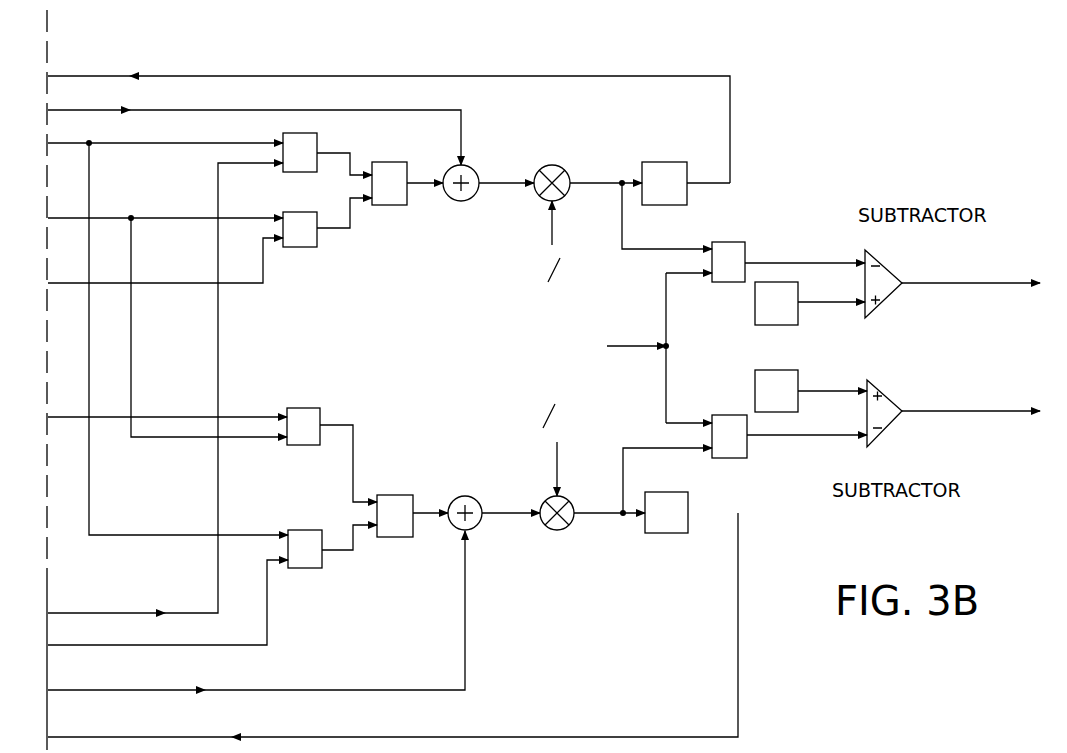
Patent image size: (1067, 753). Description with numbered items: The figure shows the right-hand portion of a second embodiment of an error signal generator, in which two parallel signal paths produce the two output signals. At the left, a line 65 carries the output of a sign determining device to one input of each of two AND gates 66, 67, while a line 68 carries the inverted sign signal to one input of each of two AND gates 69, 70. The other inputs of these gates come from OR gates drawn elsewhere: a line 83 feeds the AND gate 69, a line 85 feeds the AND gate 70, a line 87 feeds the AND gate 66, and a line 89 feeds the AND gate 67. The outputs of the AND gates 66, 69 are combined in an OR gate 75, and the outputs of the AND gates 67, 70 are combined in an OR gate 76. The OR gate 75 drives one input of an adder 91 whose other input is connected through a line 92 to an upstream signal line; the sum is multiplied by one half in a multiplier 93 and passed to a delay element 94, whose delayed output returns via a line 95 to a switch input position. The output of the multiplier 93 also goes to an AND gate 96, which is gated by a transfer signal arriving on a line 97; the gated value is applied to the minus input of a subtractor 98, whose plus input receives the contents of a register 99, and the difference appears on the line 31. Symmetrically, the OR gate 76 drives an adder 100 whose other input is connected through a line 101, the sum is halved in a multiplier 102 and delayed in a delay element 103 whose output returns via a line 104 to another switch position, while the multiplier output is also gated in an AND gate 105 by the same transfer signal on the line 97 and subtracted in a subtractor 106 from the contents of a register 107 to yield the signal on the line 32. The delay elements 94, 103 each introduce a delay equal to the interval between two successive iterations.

The line 31 is at (972, 281).
The line 32 is at (985, 409).
The line 65 is at (60, 143).
The AND gate 66 is at (315, 137).
The AND gate 67 is at (296, 530).
The line 68 is at (62, 216).
The AND gate 69 is at (317, 245).
The AND gate 70 is at (305, 408).
The OR gate 75 is at (394, 162).
The OR gate 76 is at (392, 495).
The line 83 is at (63, 281).
The line 85 is at (62, 414).
The line 87 is at (90, 612).
The line 89 is at (215, 647).
The adder 91 is at (460, 202).
The line 92 is at (195, 112).
The multiplier 93 is at (563, 168).
The delay element 94 is at (660, 160).
The line 95 is at (340, 76).
The AND gate 96 is at (738, 243).
The line 97 is at (642, 342).
The subtractor 98 is at (892, 272).
The register 99 is at (800, 292).
The adder 100 is at (468, 497).
The line 101 is at (275, 690).
The multiplier 102 is at (567, 530).
The delay element 103 is at (668, 534).
The line 104 is at (505, 735).
The AND gate 105 is at (740, 458).
The subtractor 106 is at (880, 430).
The register 107 is at (755, 375).